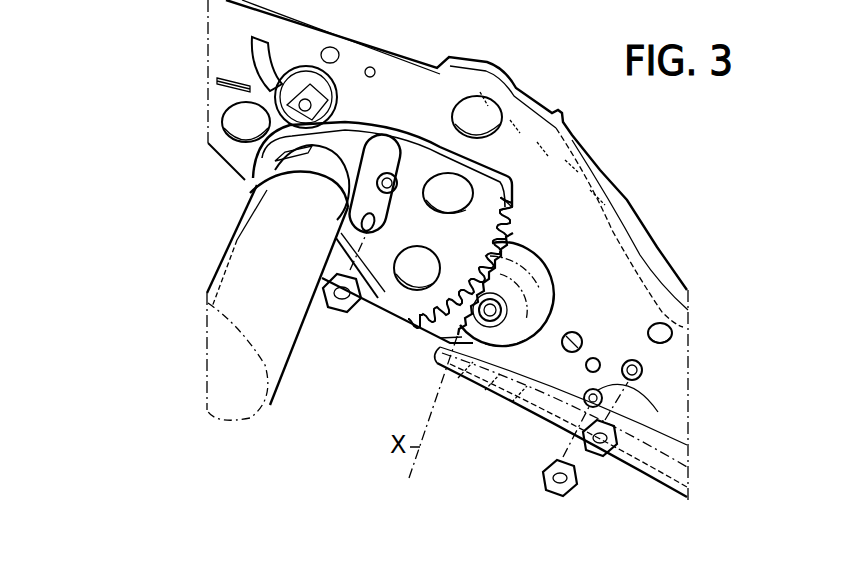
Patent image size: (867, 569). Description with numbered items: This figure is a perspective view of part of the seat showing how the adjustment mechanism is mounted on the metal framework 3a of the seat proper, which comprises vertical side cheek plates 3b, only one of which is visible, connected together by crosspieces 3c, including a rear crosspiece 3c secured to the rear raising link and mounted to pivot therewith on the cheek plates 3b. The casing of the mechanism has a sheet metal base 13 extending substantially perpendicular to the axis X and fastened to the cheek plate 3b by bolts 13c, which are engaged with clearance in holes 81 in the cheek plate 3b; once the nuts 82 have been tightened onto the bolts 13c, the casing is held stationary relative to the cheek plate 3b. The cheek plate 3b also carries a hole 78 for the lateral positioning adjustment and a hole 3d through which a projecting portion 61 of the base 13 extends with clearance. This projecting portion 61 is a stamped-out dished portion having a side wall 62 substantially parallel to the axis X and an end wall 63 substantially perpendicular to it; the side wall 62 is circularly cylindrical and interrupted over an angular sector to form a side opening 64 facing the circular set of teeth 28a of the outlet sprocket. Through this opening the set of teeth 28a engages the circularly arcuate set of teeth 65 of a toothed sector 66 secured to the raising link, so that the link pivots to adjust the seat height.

The metal framework 3a is at (640, 207).
The cheek plate 3b is at (630, 296).
The crosspiece 3c is at (243, 238).
The hole 3d is at (560, 277).
The base 13 is at (458, 332).
The bolt 13c is at (404, 181).
The circular set of teeth 28a is at (422, 333).
The projecting portion 61 is at (510, 340).
The side wall 62 is at (540, 268).
The end wall 63 is at (486, 322).
The side opening 64 is at (480, 248).
The circularly arcuate set of teeth 65 is at (510, 235).
The toothed sector 66 is at (406, 150).
The hole 78 is at (575, 340).
The hole 81 is at (380, 172).
The nut 82 is at (335, 312).